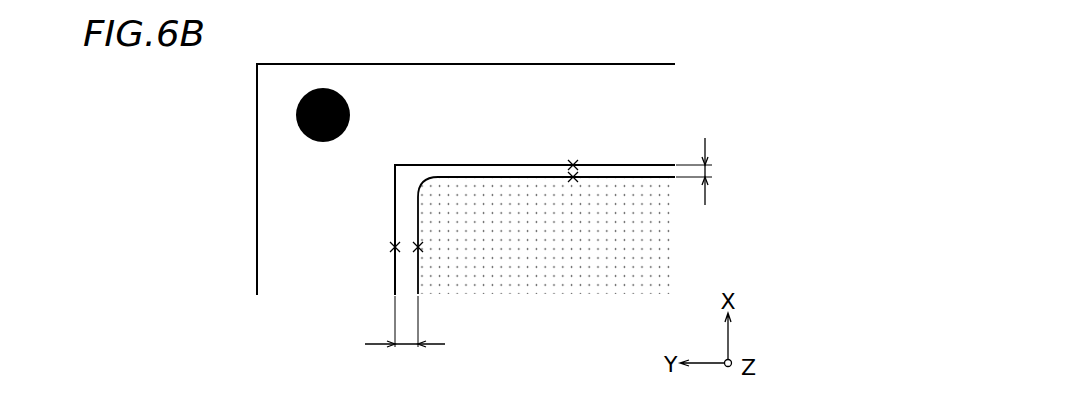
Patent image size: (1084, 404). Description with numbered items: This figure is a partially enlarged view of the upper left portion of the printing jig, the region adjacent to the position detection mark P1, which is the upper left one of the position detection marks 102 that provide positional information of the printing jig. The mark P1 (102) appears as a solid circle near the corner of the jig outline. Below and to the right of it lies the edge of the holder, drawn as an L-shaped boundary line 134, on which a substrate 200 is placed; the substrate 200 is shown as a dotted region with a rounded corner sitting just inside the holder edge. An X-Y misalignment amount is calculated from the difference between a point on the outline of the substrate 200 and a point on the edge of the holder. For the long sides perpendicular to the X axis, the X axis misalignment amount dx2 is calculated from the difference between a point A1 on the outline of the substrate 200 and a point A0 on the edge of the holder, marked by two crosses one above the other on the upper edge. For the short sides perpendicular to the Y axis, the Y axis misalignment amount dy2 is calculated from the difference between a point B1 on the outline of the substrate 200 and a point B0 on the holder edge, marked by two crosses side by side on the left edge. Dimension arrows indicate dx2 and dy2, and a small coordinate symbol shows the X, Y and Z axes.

The position detection mark P1 is at (240, 122).
The position detection mark 102 is at (295, 115).
The inner boundary line 134 is at (641, 165).
The substrate 200 is at (643, 265).
The point A0 is at (573, 163).
The point A1 is at (573, 179).
The point B0 is at (391, 247).
The point B1 is at (422, 247).
The X axis misalignment amount dx2 is at (714, 171).
The Y axis misalignment amount dy2 is at (405, 339).